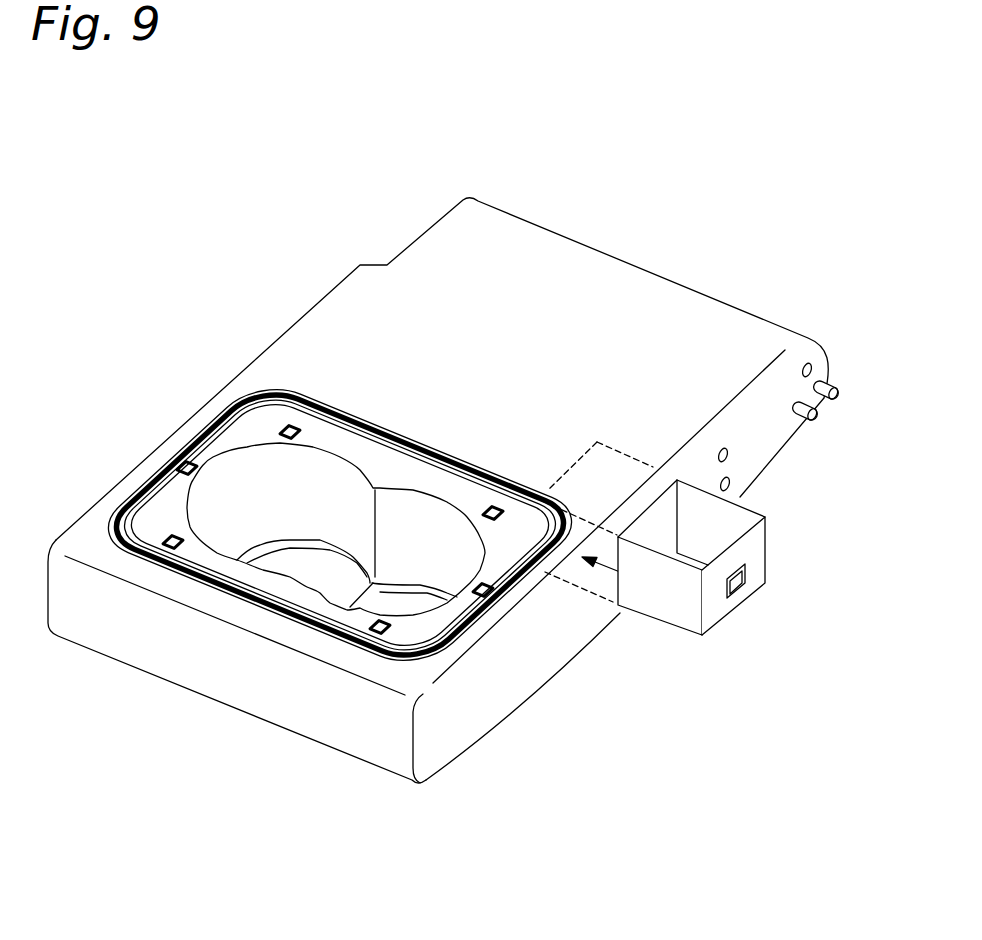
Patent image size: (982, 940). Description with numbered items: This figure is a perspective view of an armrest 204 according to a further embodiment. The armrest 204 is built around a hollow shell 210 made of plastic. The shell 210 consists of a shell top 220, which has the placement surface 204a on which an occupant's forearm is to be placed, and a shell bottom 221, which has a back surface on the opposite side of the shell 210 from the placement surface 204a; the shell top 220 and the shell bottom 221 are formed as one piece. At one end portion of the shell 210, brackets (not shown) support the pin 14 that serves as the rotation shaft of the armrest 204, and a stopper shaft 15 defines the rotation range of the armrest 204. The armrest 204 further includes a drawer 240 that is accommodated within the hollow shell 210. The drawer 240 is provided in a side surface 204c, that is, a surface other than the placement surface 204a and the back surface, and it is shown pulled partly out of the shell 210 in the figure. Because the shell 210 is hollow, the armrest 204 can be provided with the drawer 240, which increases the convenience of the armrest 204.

The armrest 204 is at (570, 62).
The placement surface 204a is at (642, 327).
The side surface 204c is at (548, 642).
The hollow shell 210 is at (209, 801).
The shell top 220 is at (233, 612).
The shell bottom 221 is at (257, 715).
The drawer 240 is at (740, 597).
The pin 14 is at (818, 407).
The stopper shaft 15 is at (840, 385).